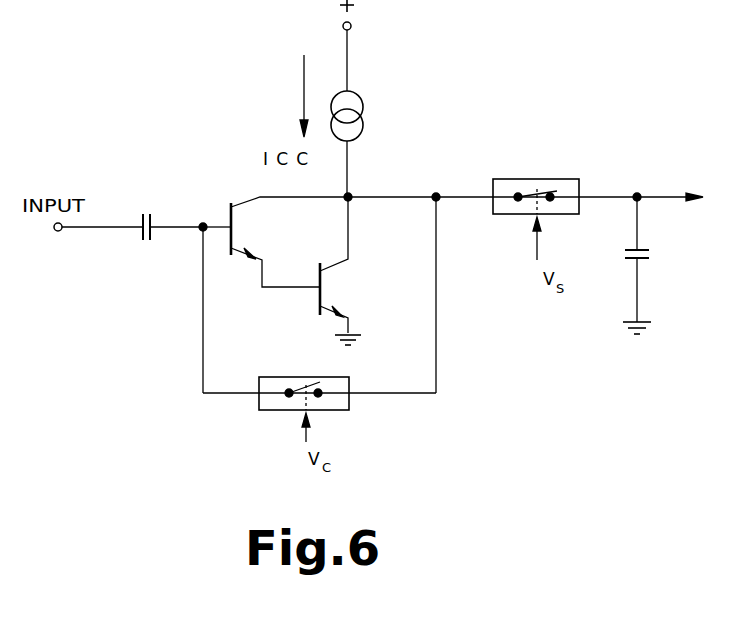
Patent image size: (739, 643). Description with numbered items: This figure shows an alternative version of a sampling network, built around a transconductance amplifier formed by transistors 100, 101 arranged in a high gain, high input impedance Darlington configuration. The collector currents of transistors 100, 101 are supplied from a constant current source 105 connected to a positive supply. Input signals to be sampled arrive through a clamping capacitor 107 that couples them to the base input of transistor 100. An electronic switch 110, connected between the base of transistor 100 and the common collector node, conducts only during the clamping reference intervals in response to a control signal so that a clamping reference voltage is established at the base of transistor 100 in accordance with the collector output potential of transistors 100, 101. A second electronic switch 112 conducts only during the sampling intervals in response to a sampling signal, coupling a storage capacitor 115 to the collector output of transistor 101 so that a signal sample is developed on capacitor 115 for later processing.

The transistor 100 is at (272, 236).
The transistor 101 is at (360, 300).
The constant current source 105 is at (415, 106).
The clamping capacitor 107 is at (154, 239).
The electronic switch 110 is at (349, 410).
The electronic switch 112 is at (572, 216).
The storage capacitor 115 is at (641, 250).